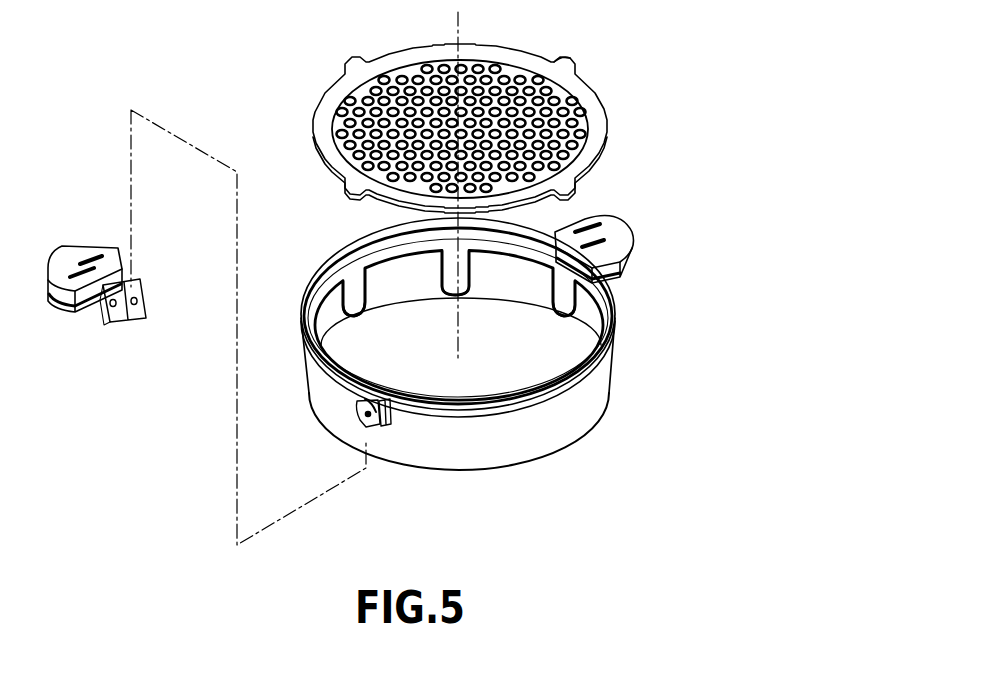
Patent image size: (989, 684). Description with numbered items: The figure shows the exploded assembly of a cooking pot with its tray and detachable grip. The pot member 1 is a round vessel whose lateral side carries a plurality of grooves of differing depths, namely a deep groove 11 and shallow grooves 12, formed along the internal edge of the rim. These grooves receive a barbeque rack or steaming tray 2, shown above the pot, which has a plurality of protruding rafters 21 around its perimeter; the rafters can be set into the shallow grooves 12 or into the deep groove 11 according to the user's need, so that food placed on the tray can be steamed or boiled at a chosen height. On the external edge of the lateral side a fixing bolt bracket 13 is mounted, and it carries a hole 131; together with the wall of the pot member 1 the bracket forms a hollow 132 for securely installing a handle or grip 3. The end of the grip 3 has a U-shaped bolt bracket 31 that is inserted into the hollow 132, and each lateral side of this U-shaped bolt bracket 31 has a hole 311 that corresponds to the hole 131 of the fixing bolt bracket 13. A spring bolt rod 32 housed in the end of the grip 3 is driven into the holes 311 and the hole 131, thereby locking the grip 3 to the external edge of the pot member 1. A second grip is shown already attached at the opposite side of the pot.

The pot member 1 is at (585, 397).
The deep groove 11 is at (450, 273).
The shallow groove 12 is at (350, 293).
The fixing bolt bracket 13 is at (351, 467).
The hole 131 is at (368, 418).
The hollow 132 is at (380, 428).
The barbeque rack or steaming tray 2 is at (590, 123).
The protruding rafter 21 is at (566, 70).
The handle or grip 3 is at (605, 232).
The U-shaped bolt bracket 31 is at (156, 333).
The hole 311 is at (130, 320).
The spring bolt rod 32 is at (107, 317).